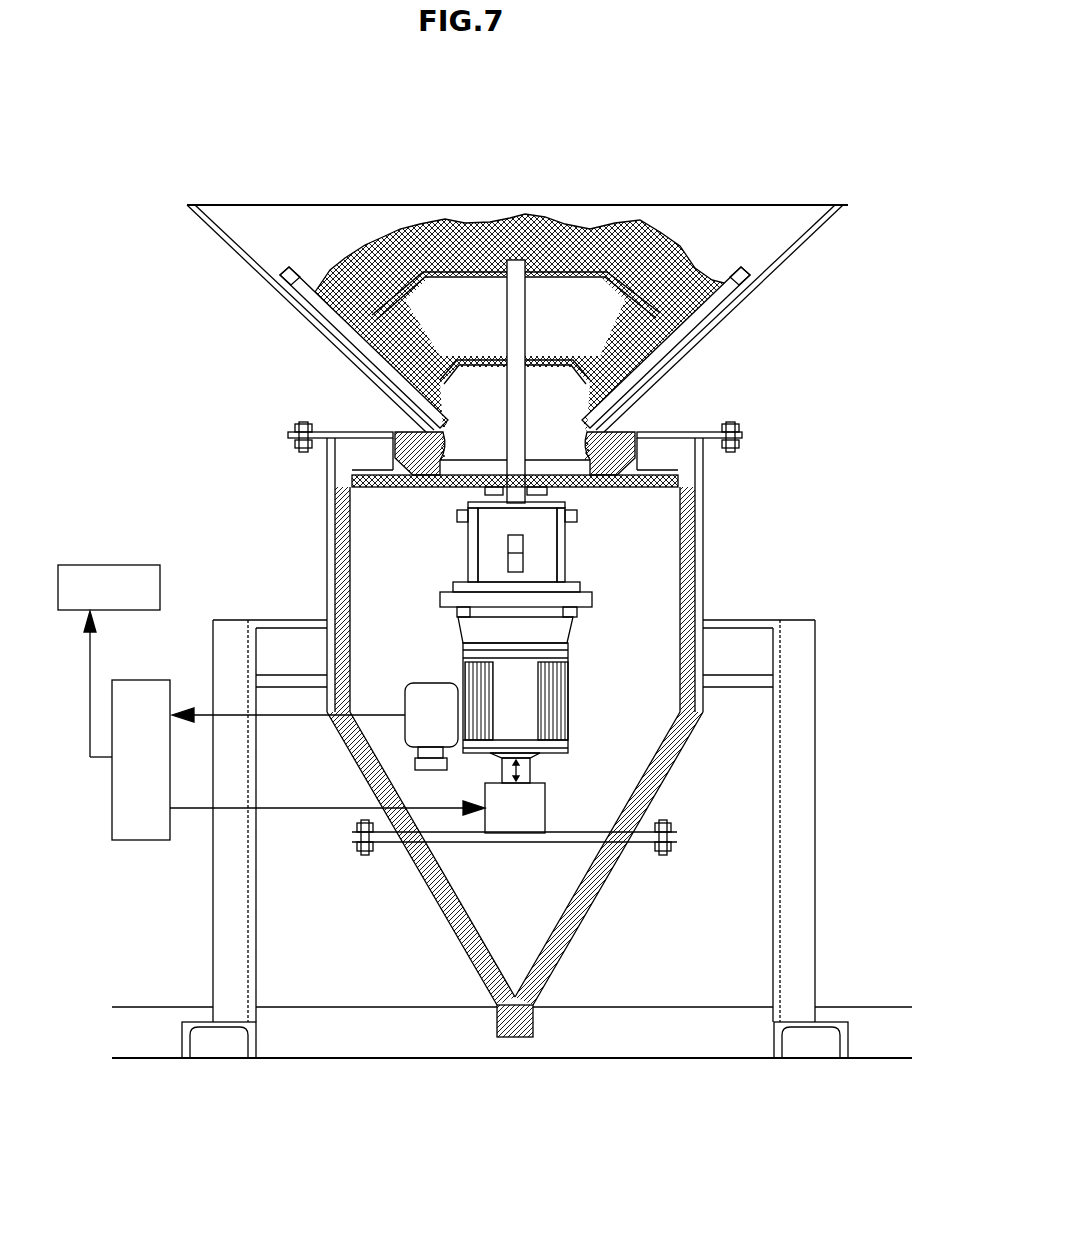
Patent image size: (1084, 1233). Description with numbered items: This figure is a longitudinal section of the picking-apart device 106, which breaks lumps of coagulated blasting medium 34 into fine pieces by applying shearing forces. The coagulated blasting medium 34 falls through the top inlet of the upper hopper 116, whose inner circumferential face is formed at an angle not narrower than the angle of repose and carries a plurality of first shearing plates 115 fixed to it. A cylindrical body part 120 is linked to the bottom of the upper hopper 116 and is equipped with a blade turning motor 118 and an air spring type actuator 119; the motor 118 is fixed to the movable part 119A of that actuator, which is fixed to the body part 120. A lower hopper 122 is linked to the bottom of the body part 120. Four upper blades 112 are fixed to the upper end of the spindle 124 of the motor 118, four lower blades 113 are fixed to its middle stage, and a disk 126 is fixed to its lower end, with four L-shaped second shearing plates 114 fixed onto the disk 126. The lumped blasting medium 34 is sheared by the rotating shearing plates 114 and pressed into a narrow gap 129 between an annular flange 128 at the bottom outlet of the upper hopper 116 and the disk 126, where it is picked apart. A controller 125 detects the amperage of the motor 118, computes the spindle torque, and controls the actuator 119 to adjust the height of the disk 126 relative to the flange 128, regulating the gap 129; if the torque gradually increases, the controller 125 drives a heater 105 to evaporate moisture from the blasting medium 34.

The blasting medium 34 is at (598, 232).
The heater 105 is at (160, 590).
The picking-apart device 106 is at (810, 390).
The upper blades 112 is at (363, 343).
The lower blades 113 is at (465, 353).
The second shearing plates 114 is at (462, 490).
The first shearing plates 115 is at (298, 276).
The upper hopper 116 is at (753, 303).
The blade turning motor 118 is at (565, 683).
The air spring type actuator 119 is at (547, 812).
The movable part 119A is at (527, 767).
The body part 120 is at (703, 583).
The lower hopper 122 is at (605, 912).
The spindle 124 is at (522, 317).
The controller 125 is at (165, 680).
The disk 126 is at (477, 472).
The annular flange 128 is at (668, 468).
The gap 129 is at (350, 478).